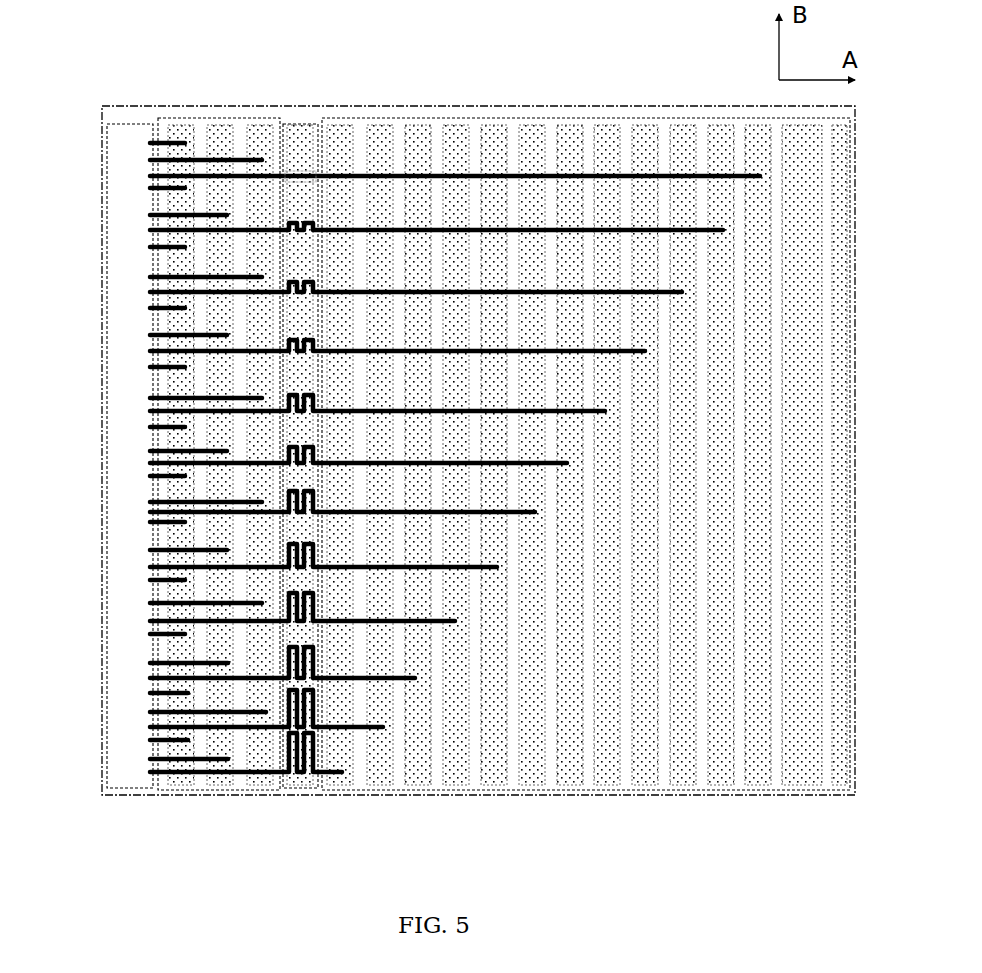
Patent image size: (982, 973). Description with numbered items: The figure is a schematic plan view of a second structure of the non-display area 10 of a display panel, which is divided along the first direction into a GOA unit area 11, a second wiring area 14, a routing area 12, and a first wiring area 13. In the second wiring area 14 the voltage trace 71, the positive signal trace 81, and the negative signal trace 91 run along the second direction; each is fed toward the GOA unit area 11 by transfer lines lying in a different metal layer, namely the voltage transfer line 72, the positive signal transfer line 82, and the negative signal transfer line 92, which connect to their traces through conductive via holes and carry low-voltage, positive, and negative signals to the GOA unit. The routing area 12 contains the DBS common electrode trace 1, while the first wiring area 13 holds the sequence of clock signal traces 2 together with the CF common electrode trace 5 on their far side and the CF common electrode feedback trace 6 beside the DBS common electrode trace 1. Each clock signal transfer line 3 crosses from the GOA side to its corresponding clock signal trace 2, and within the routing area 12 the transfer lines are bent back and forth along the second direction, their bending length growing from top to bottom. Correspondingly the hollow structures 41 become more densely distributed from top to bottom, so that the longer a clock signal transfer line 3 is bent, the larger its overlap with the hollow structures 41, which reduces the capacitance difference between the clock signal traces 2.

The non-display area 10 is at (500, 107).
The GOA unit area 11 is at (133, 127).
The routing area 12 is at (292, 128).
The first wiring area 13 is at (630, 118).
The second wiring area 14 is at (228, 125).
The hollow structure 41 is at (302, 170).
The negative signal transfer line 92 is at (150, 162).
The positive signal transfer line 82 is at (150, 213).
The voltage transfer line 72 is at (153, 308).
The clock signal transfer line 3 is at (153, 352).
The voltage trace 71 is at (172, 788).
The positive signal trace 81 is at (213, 788).
The negative signal trace 91 is at (253, 788).
The DBS common electrode trace 1 is at (297, 788).
The clock signal trace 2 is at (338, 788).
The CF common electrode trace 5 is at (798, 785).
The CF common electrode feedback trace 6 is at (838, 785).